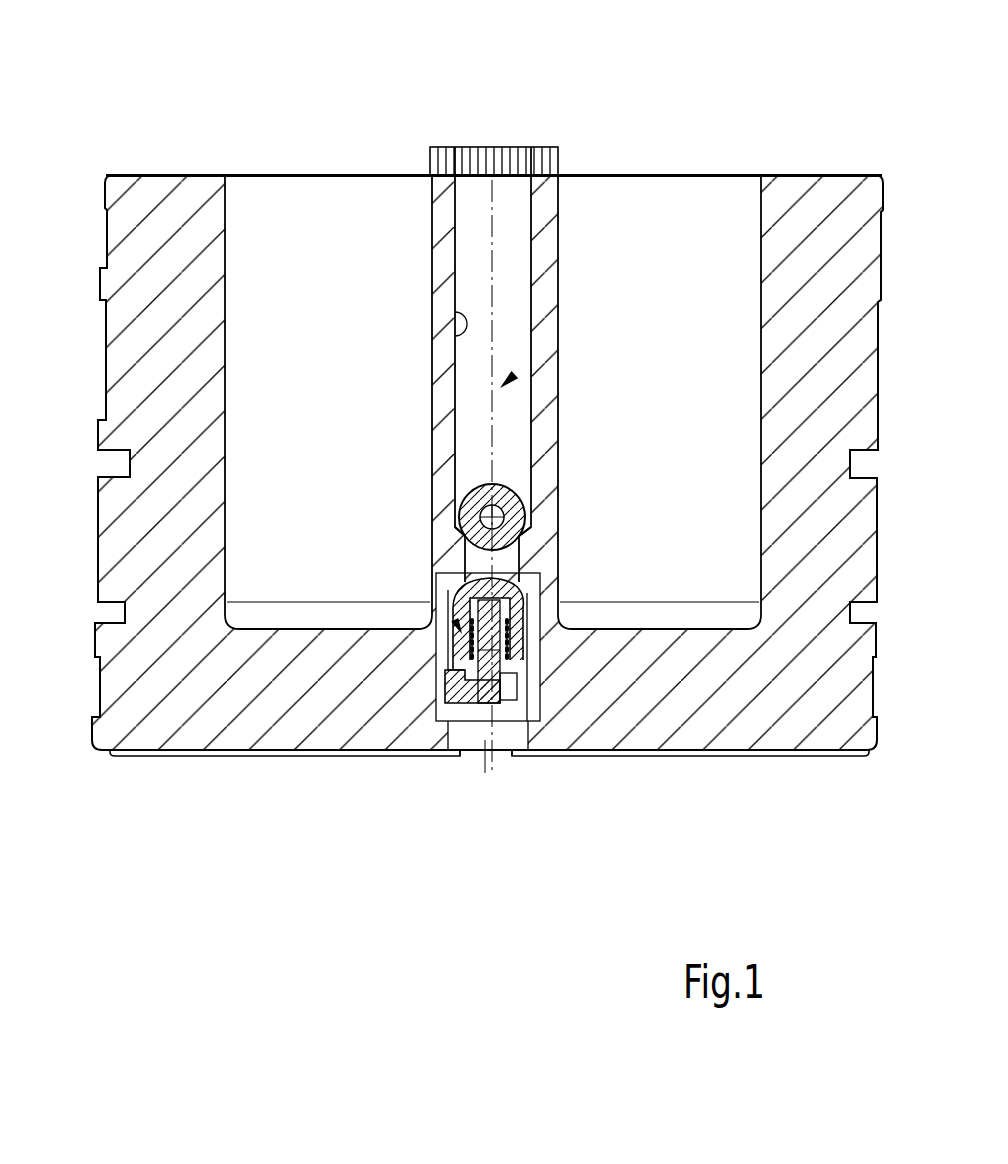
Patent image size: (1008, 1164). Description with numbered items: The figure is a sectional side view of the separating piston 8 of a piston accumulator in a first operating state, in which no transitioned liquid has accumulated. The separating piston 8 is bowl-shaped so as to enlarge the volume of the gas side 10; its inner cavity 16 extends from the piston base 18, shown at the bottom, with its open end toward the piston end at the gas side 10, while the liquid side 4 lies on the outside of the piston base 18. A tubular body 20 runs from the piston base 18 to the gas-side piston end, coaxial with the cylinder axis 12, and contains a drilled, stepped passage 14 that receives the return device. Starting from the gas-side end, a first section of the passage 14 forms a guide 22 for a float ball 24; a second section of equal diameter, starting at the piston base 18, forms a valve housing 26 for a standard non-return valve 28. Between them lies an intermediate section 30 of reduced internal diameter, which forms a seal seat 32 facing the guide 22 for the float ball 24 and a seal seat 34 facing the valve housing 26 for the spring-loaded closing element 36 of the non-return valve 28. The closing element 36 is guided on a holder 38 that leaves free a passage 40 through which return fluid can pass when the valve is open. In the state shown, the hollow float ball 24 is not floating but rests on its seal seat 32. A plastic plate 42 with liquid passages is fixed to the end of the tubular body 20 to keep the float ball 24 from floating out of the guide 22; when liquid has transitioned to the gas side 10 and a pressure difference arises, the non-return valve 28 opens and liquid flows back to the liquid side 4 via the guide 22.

The liquid side 4 is at (223, 757).
The separating piston 8 is at (160, 560).
The gas side 10 is at (805, 175).
The cylinder axis 12 is at (485, 760).
The passage 14 is at (503, 385).
The inner cavity 16 is at (284, 250).
The piston base 18 is at (767, 667).
The tubular body 20 is at (440, 406).
The guide 22 is at (455, 350).
The float ball 24 is at (510, 498).
The valve housing 26 is at (528, 625).
The non-return valve 28 is at (454, 620).
The intermediate section 30 is at (503, 560).
The seal seat 32 is at (535, 540).
The seal seat 34 is at (520, 582).
The closing element 36 is at (522, 605).
The holder 38 is at (455, 632).
The passage 40 is at (510, 695).
The plastic plate 42 is at (514, 150).